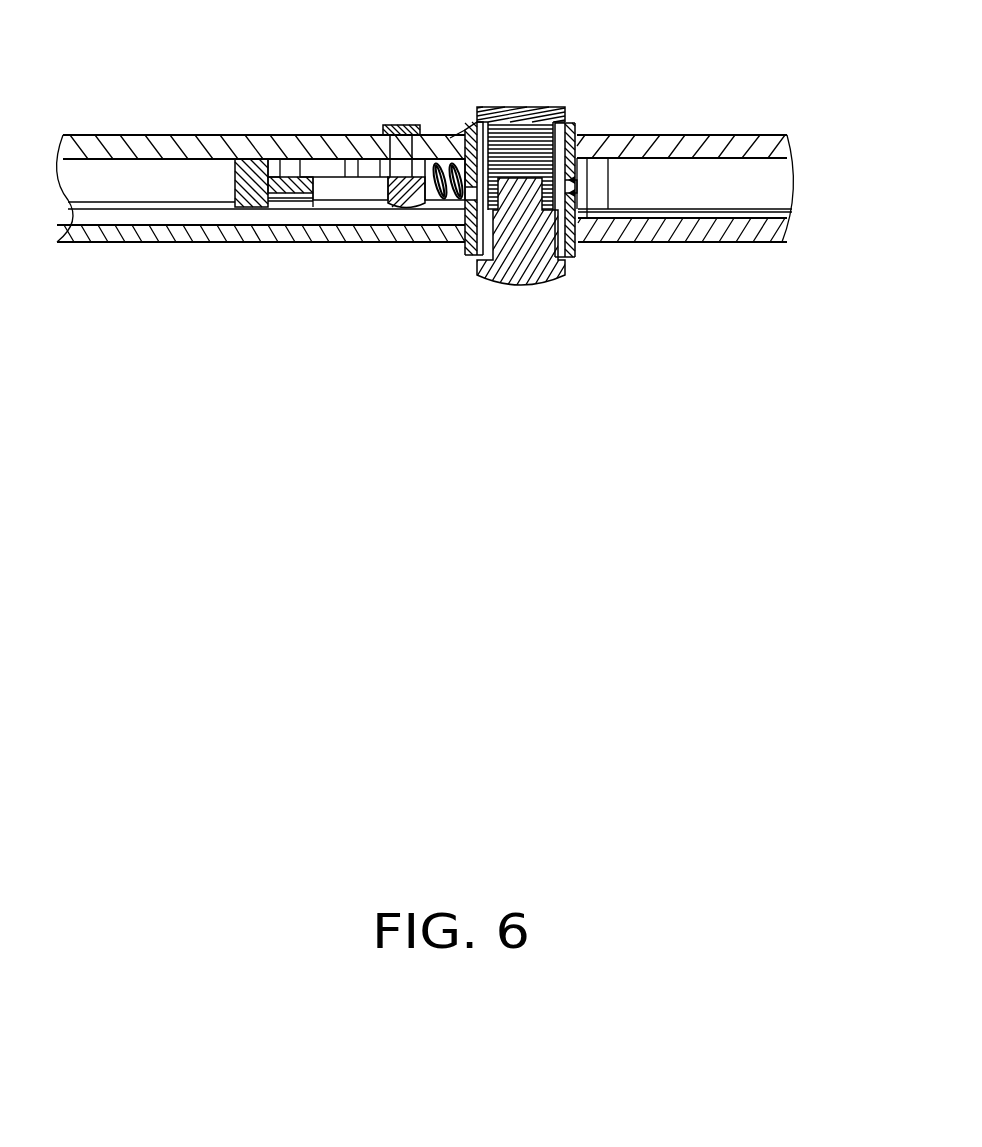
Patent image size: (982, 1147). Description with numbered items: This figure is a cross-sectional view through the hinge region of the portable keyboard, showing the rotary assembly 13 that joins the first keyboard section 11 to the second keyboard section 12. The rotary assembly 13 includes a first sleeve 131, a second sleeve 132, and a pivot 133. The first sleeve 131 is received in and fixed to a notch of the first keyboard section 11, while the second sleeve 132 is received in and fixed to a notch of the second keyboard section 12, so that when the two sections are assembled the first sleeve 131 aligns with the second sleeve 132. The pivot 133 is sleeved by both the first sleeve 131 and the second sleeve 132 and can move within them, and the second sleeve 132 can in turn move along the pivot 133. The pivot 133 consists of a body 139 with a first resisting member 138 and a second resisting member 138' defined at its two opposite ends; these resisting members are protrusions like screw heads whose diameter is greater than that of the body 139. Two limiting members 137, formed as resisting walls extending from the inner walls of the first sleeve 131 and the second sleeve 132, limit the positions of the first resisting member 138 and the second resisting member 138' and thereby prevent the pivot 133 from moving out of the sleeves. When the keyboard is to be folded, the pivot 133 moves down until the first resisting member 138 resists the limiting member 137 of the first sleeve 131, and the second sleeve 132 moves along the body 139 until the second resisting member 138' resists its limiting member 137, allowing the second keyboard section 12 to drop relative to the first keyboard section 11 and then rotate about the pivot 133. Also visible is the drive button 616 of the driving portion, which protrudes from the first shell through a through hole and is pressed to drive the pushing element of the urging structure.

The first keyboard section 11 is at (183, 147).
The second keyboard section 12 is at (738, 142).
The rotary assembly 13 is at (511, 76).
The first sleeve 131 is at (573, 134).
The second sleeve 132 is at (575, 233).
The pivot 133 is at (485, 393).
The limiting members 137 is at (573, 193).
The first resisting member 138 is at (389, 246).
The second resisting member 138' is at (530, 278).
The body 139 is at (466, 210).
The drive button 616 is at (397, 127).